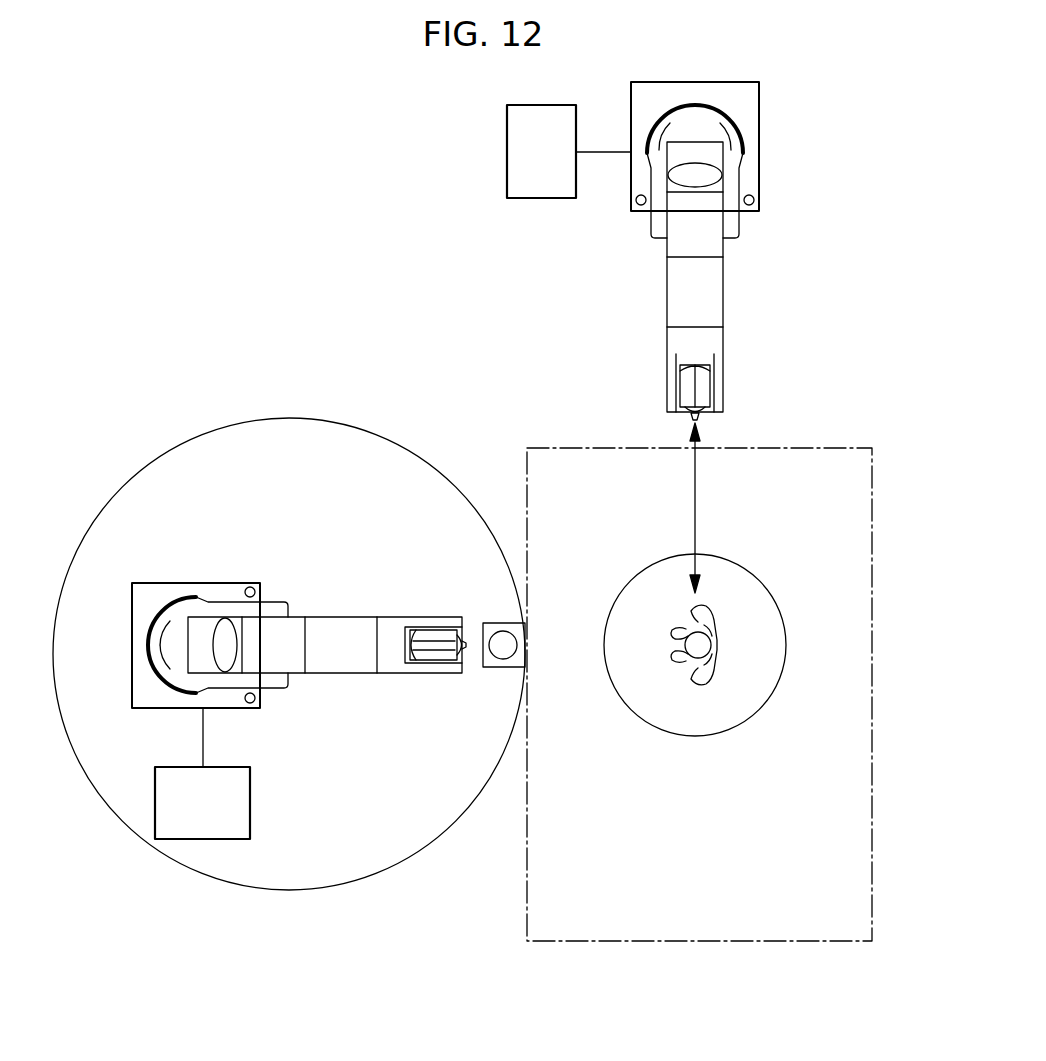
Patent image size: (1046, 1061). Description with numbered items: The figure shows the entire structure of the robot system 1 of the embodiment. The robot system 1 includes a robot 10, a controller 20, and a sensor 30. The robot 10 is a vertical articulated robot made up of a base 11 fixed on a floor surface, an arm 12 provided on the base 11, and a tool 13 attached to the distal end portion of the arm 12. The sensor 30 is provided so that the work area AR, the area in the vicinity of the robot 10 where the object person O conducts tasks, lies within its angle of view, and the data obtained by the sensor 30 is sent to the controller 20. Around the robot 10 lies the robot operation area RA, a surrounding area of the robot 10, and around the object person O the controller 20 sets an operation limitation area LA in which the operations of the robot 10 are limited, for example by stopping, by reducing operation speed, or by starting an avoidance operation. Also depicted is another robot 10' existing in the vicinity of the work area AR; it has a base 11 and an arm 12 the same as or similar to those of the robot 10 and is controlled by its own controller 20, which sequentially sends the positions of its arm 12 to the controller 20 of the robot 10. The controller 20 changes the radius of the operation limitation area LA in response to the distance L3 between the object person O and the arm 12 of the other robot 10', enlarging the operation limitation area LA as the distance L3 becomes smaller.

The robot system 1 is at (256, 525).
The robot 10 is at (263, 584).
The other robot 10' is at (762, 213).
The base 11 is at (727, 150).
The arm 12 is at (723, 311).
The tool 13 is at (688, 413).
The controller 20 is at (507, 152).
The sensor 30 is at (500, 623).
The robot operation area RA is at (364, 432).
The work area AR is at (612, 943).
The operation limitation area LA is at (718, 556).
The distance L3 is at (679, 508).
The object person O is at (712, 683).